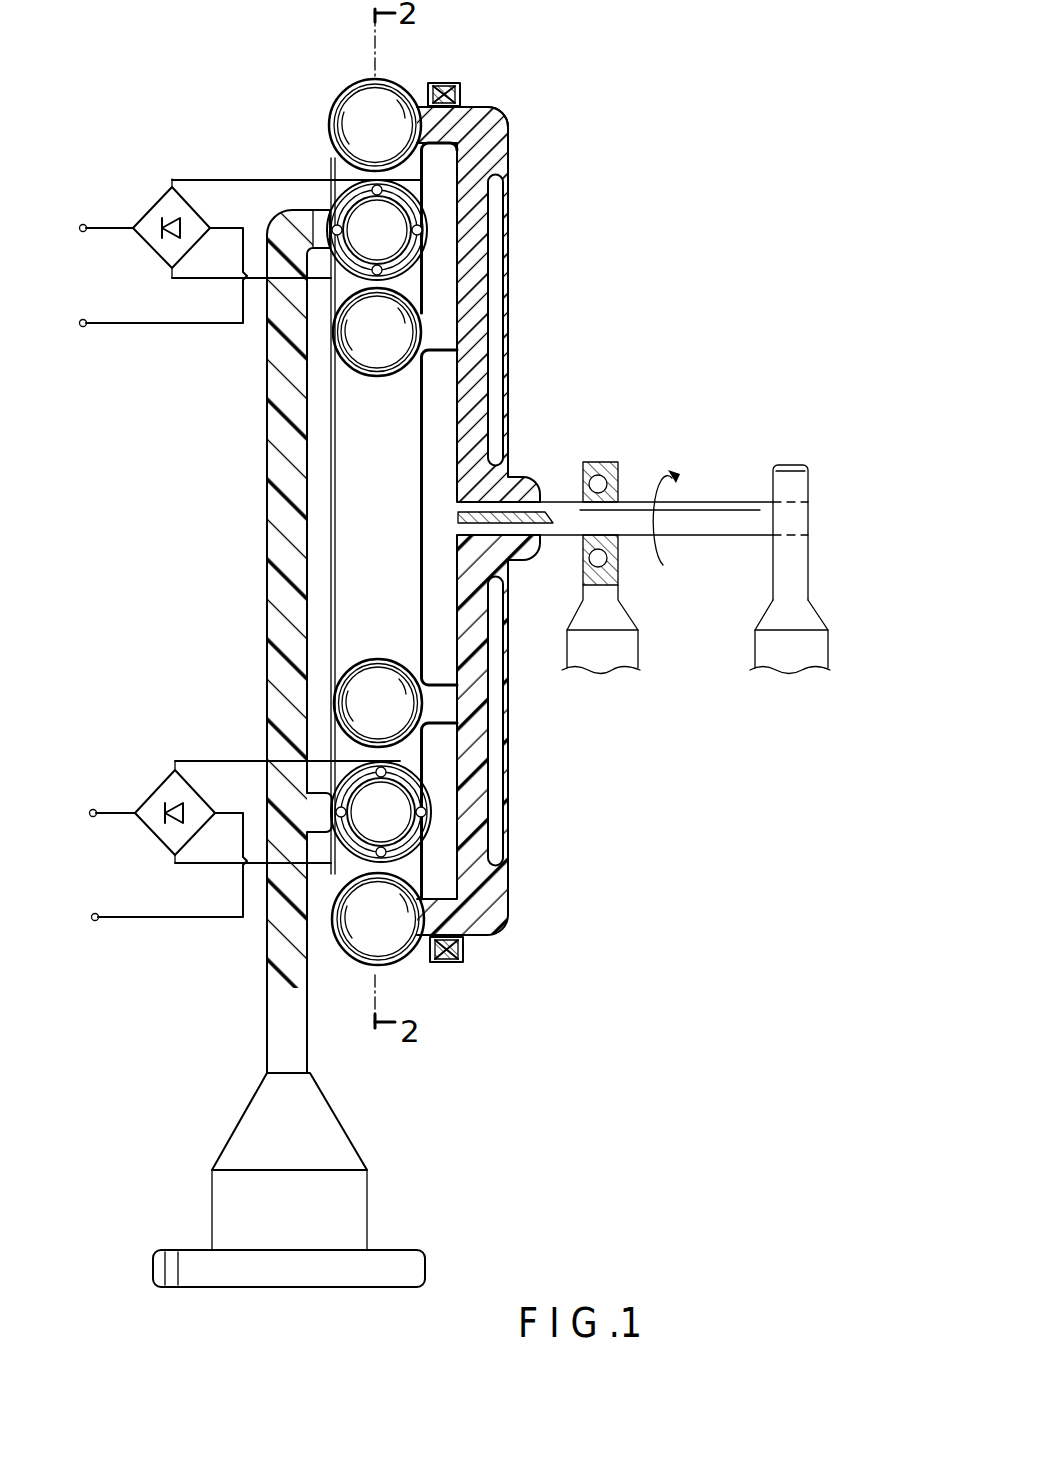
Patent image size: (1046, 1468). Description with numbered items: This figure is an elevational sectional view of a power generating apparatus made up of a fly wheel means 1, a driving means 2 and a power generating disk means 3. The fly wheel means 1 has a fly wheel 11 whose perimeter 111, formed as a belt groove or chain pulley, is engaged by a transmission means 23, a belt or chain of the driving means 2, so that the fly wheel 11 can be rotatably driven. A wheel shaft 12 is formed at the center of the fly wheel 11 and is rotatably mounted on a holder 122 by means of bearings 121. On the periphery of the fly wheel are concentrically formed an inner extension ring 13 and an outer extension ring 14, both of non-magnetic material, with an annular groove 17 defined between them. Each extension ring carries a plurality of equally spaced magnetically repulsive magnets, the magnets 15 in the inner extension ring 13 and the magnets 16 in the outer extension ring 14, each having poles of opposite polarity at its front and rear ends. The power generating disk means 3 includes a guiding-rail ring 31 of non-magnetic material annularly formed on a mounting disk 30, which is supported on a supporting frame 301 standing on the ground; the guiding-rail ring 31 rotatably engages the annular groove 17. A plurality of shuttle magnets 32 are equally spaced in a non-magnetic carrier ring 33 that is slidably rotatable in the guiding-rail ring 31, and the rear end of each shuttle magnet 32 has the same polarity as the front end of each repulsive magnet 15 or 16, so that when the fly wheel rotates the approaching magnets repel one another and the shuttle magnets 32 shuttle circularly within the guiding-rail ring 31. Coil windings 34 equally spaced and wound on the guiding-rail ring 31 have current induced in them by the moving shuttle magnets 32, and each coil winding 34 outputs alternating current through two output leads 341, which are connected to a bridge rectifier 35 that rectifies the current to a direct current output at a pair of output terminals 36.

The fly wheel means 1 is at (512, 157).
The driving means 2 is at (452, 78).
The power generating disk means 3 is at (261, 468).
The fly wheel 11 is at (478, 337).
The wheel shaft 12 is at (708, 518).
The inner extension ring 13 is at (398, 378).
The outer extension ring 14 is at (349, 82).
The magnetically repulsive magnet 15 is at (400, 330).
The magnetically repulsive magnet 16 is at (368, 120).
The annular groove 17 is at (420, 181).
The transmission means 23 is at (440, 88).
The mounting disk 30 is at (272, 586).
The guiding-rail ring 31 is at (330, 188).
The shuttle magnet 32 is at (357, 235).
The carrier ring 33 is at (347, 205).
The coil winding 34 is at (352, 248).
The bridge rectifier 35 is at (148, 212).
The output terminals 36 is at (84, 320).
The perimeter 111 is at (467, 98).
The bearings 121 is at (620, 483).
The holder 122 is at (777, 640).
The supporting frame 301 is at (225, 1208).
The output leads 341 is at (213, 278).